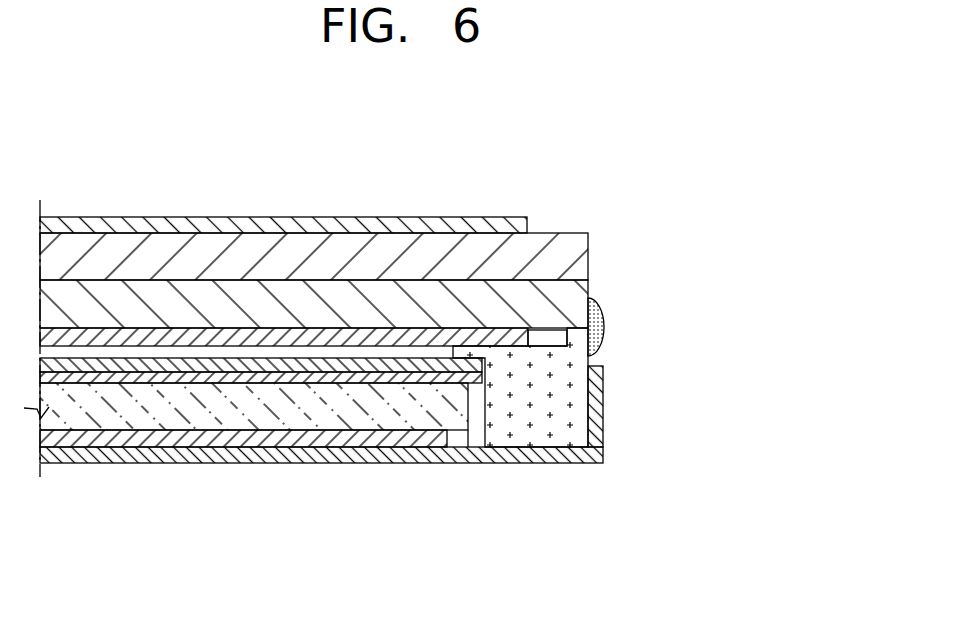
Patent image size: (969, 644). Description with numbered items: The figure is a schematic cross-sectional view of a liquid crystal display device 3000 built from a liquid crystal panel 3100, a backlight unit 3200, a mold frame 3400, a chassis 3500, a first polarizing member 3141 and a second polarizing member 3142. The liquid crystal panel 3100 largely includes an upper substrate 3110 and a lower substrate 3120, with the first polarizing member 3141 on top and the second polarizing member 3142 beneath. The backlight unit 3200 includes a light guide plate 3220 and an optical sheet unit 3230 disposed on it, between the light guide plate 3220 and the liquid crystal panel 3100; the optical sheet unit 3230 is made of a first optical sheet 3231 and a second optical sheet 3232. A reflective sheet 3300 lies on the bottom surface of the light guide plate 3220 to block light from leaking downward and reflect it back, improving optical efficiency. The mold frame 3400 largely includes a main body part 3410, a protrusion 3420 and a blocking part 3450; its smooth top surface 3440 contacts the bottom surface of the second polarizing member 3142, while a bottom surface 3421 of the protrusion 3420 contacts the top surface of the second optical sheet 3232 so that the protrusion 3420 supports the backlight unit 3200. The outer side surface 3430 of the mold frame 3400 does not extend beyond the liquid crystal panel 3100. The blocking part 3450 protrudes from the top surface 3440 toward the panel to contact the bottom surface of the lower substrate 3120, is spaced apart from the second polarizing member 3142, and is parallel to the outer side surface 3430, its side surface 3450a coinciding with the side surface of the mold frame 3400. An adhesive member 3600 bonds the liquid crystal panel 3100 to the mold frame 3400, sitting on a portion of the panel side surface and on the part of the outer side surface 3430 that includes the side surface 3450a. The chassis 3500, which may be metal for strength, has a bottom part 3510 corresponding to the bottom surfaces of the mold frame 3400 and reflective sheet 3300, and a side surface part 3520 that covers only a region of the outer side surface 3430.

The liquid crystal display device 3000 is at (641, 116).
The liquid crystal panel 3100 is at (408, 272).
The upper substrate 3110 is at (589, 250).
The lower substrate 3120 is at (589, 298).
The first polarizing member 3141 is at (528, 224).
The second polarizing member 3142 is at (127, 336).
The backlight unit 3200 is at (261, 495).
The light guide plate 3220 is at (323, 416).
The optical sheet unit 3230 is at (261, 474).
The first optical sheet 3231 is at (230, 379).
The second optical sheet 3232 is at (191, 371).
The reflective sheet 3300 is at (405, 446).
The mold frame 3400 is at (621, 403).
The main body part 3410 is at (487, 396).
The protrusion 3420 is at (533, 395).
The bottom surface of the protrusion 3421 is at (647, 462).
The outer side surface 3430 is at (485, 368).
The top surface 3440 is at (495, 341).
The blocking part 3450 is at (590, 353).
The side surface of the blocking part 3450a is at (578, 341).
The chassis 3500 is at (341, 478).
The bottom part 3510 is at (527, 464).
The side surface part 3520 is at (605, 464).
The adhesive member 3600 is at (604, 323).